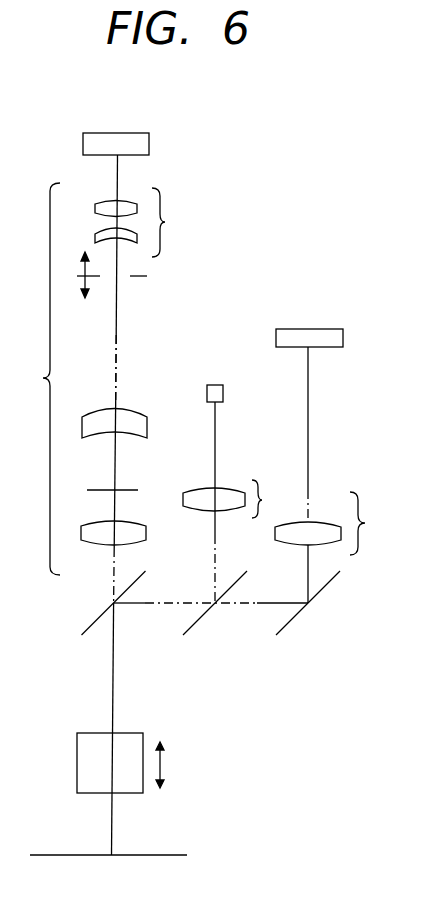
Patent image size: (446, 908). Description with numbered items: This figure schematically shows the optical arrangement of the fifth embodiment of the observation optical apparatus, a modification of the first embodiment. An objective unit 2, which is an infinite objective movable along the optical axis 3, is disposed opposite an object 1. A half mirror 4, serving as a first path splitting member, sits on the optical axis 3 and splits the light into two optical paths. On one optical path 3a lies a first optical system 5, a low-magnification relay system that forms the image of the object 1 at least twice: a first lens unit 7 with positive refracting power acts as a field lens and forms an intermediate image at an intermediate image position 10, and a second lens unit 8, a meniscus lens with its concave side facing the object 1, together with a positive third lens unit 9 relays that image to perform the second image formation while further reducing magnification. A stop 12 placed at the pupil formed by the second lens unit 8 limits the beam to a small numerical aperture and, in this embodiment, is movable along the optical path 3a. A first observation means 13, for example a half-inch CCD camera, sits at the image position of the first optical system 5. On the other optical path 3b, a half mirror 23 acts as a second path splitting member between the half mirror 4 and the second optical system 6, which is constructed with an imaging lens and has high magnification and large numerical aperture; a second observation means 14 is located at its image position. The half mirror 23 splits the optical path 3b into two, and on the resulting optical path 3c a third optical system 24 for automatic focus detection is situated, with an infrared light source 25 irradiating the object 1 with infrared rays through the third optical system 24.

The object 1 is at (60, 855).
The objective unit 2 is at (77, 748).
The optical axis 3 is at (112, 675).
The optical path 3a is at (116, 347).
The optical path 3b is at (177, 607).
The optical path 3c is at (215, 560).
The half mirror 4 is at (102, 615).
The first optical system 5 is at (43, 379).
The second optical system 6 is at (330, 562).
The first lens unit 7 is at (146, 533).
The second lens unit 8 is at (135, 410).
The third lens unit 9 is at (139, 222).
The intermediate image position 10 is at (130, 490).
The stop 12 is at (147, 276).
The first observation means 13 is at (140, 133).
The second observation means 14 is at (343, 338).
The half mirror 23 is at (200, 620).
The third optical system 24 is at (239, 499).
The infrared light source 25 is at (215, 383).